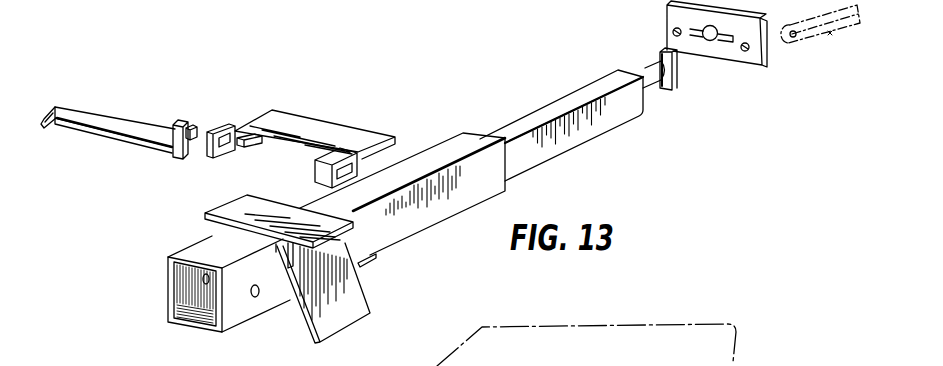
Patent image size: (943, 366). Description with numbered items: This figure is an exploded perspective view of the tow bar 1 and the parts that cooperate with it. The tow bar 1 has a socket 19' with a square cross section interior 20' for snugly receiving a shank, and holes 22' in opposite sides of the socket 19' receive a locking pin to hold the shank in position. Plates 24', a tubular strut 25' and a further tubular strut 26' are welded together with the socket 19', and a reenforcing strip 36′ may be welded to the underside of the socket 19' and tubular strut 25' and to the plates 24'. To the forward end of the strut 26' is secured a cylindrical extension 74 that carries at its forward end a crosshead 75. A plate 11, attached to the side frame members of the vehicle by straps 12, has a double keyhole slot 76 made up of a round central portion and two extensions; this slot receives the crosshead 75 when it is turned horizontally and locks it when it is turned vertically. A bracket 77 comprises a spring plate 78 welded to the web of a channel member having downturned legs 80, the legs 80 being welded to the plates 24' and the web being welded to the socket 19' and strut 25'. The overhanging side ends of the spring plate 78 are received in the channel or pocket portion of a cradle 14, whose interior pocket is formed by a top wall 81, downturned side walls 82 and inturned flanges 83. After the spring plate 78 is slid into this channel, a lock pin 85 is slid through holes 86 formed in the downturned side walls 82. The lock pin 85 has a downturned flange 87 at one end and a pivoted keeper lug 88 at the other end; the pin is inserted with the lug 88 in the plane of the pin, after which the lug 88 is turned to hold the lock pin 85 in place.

The tow bar 1 is at (402, 187).
The plate 11 is at (727, 49).
The straps 12 is at (834, 38).
The cradle 14 is at (317, 137).
The socket 19' is at (225, 300).
The square cross section interior 20' is at (188, 309).
The holes 22' is at (271, 314).
The plates 24' is at (340, 294).
The tubular strut 25' is at (402, 212).
The tubular strut 26' is at (561, 125).
The reenforcing strip 36′ is at (366, 264).
The cylindrical extension 74 is at (648, 66).
The crosshead 75 is at (675, 82).
The double keyhole slot 76 is at (708, 46).
The bracket 77 is at (278, 268).
The spring plate 78 is at (228, 209).
The downturned legs 80 is at (291, 258).
The top wall 81 is at (316, 118).
The downturned side walls 82 is at (395, 149).
The inturned flanges 83 is at (250, 147).
The lock pin 85 is at (115, 129).
The holes 86 is at (226, 150).
The downturned flange 87 is at (44, 121).
The pivoted keeper lug 88 is at (173, 154).